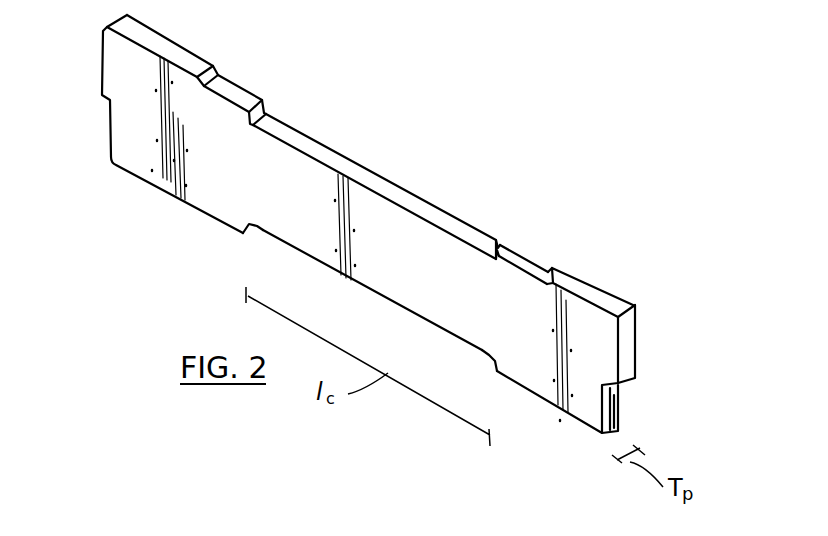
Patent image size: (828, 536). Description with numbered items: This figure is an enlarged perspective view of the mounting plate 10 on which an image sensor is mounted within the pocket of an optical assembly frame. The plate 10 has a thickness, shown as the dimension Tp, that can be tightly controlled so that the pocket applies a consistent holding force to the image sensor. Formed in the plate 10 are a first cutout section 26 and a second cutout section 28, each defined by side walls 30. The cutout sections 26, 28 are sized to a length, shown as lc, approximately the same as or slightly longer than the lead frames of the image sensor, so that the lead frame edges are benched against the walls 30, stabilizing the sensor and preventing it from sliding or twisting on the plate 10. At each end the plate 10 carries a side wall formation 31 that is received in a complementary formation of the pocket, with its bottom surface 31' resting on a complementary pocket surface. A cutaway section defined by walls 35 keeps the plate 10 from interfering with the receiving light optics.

The mounting plate 10 is at (371, 234).
The first cutout section 26 is at (472, 216).
The second cutout section 28 is at (289, 266).
The side wall 30 is at (272, 117).
The side wall formation 31 is at (363, 224).
The bottom surface 31' is at (651, 408).
The wall 35 is at (217, 73).